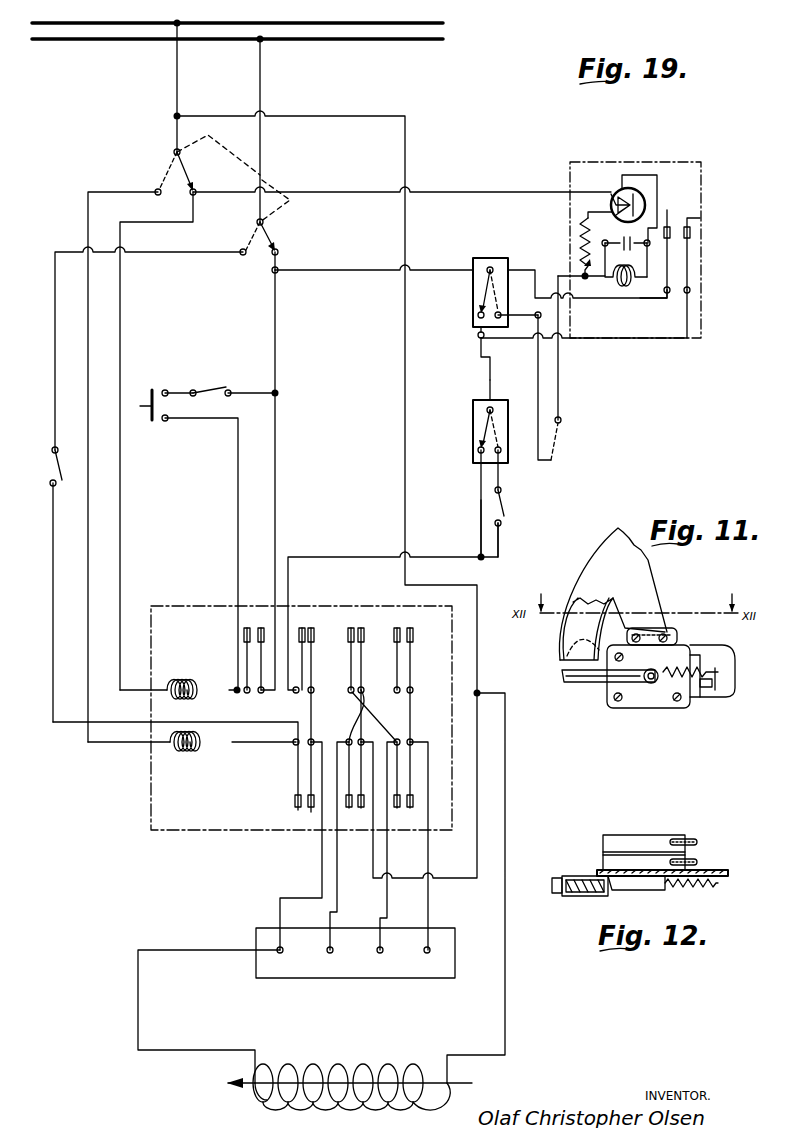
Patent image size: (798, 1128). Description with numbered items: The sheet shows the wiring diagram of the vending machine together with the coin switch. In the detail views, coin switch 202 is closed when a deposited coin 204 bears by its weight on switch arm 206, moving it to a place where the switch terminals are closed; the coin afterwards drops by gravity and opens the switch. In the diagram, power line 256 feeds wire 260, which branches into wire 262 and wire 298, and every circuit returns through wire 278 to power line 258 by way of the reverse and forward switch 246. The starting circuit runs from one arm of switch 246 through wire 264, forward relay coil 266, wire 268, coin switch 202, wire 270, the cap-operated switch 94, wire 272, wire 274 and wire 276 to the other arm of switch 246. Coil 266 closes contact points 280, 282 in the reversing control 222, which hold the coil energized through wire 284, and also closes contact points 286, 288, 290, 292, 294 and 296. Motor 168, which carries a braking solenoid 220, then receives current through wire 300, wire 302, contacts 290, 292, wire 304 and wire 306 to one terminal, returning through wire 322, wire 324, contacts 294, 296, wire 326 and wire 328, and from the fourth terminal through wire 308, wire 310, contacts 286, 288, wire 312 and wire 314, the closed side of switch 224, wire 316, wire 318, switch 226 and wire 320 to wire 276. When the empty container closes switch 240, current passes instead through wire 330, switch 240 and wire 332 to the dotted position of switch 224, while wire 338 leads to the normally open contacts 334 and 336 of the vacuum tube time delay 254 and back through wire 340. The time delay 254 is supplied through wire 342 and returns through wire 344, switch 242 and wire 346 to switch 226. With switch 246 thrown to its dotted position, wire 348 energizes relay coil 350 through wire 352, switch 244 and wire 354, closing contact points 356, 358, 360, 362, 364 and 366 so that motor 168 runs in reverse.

In FIG. 19, the power line 256 is at (66, 30).
In FIG. 19, the power line 258 is at (134, 42).
In FIG. 19, the wire 260 is at (180, 82).
In FIG. 19, the wire 278 is at (263, 86).
In FIG. 19, the wire 298 is at (318, 119).
In FIG. 19, the wire 262 is at (176, 141).
In FIG. 19, the reverse and forward switch 246 is at (186, 170).
In FIG. 19, the wire 342 is at (348, 190).
In FIG. 19, the wire 264 is at (168, 222).
In FIG. 19, the wire 348 is at (88, 300).
In FIG. 19, the wire 354 is at (55, 385).
In FIG. 19, the switch 244 is at (50, 452).
In FIG. 19, the wire 352 is at (52, 666).
In FIG. 19, the relay coil 350 is at (205, 748).
In FIG. 19, the forward relay coil 266 is at (196, 682).
In FIG. 19, the wire 276 is at (280, 268).
In FIG. 19, the wire 274 is at (278, 349).
In FIG. 19, the wire 284 is at (278, 497).
In FIG. 19, the wire 320 is at (375, 275).
In FIG. 19, the coin switch 202 is at (160, 390).
In FIG. 11, the coin switch 202 is at (666, 702).
In FIG. 12, the coin switch 202 is at (658, 844).
In FIG. 19, the wire 270 is at (179, 390).
In FIG. 12, the wire 270 is at (700, 862).
In FIG. 19, the switch 94 is at (227, 388).
In FIG. 19, the wire 272 is at (258, 392).
In FIG. 19, the wire 268 is at (237, 505).
In FIG. 12, the wire 268 is at (698, 842).
In FIG. 19, the wire 312 is at (343, 555).
In FIG. 19, the wire 330 is at (500, 553).
In FIG. 19, the switch 226 is at (472, 298).
In FIG. 19, the wire 346 is at (525, 312).
In FIG. 19, the wire 318 is at (478, 336).
In FIG. 19, the wire 338 is at (525, 341).
In FIG. 19, the wire 316 is at (489, 382).
In FIG. 19, the switch 224 is at (472, 450).
In FIG. 19, the wire 332 is at (502, 484).
In FIG. 19, the switch 240 is at (506, 519).
In FIG. 19, the wire 314 is at (491, 524).
In FIG. 19, the switch 242 is at (561, 429).
In FIG. 19, the wire 344 is at (565, 272).
In FIG. 19, the vacuum tube time delay 254 is at (648, 163).
In FIG. 19, the contact 334 is at (667, 210).
In FIG. 19, the contact 336 is at (700, 218).
In FIG. 19, the wire 340 is at (637, 300).
In FIG. 19, the reversing parts 222 is at (158, 832).
In FIG. 19, the contact point 280 is at (247, 628).
In FIG. 19, the contact point 282 is at (262, 628).
In FIG. 19, the contact point 286 is at (302, 628).
In FIG. 19, the contact point 288 is at (311, 628).
In FIG. 19, the wire 310 is at (313, 726).
In FIG. 19, the contact point 290 is at (351, 628).
In FIG. 19, the contact point 292 is at (361, 628).
In FIG. 19, the contact point 294 is at (397, 628).
In FIG. 19, the contact point 296 is at (410, 628).
In FIG. 19, the wire 302 is at (364, 692).
In FIG. 19, the wire 304 is at (356, 712).
In FIG. 19, the wire 326 is at (376, 708).
In FIG. 19, the wire 324 is at (412, 727).
In FIG. 19, the contact point 356 is at (295, 800).
In FIG. 19, the contact point 358 is at (310, 813).
In FIG. 19, the contact point 360 is at (349, 808).
In FIG. 19, the contact point 362 is at (361, 808).
In FIG. 19, the contact point 364 is at (397, 808).
In FIG. 19, the contact point 366 is at (410, 808).
In FIG. 19, the wire 306 is at (388, 874).
In FIG. 19, the wire 308 is at (321, 876).
In FIG. 19, the wire 328 is at (338, 872).
In FIG. 19, the wire 322 is at (430, 902).
In FIG. 19, the wire 300 is at (478, 840).
In FIG. 19, the motor 168 is at (423, 975).
In FIG. 19, the solenoid 220 is at (309, 1068).
In FIG. 11, the coin 204 is at (560, 648).
In FIG. 11, the switch arm 206 is at (607, 684).
In FIG. 12, the switch arm 206 is at (618, 887).